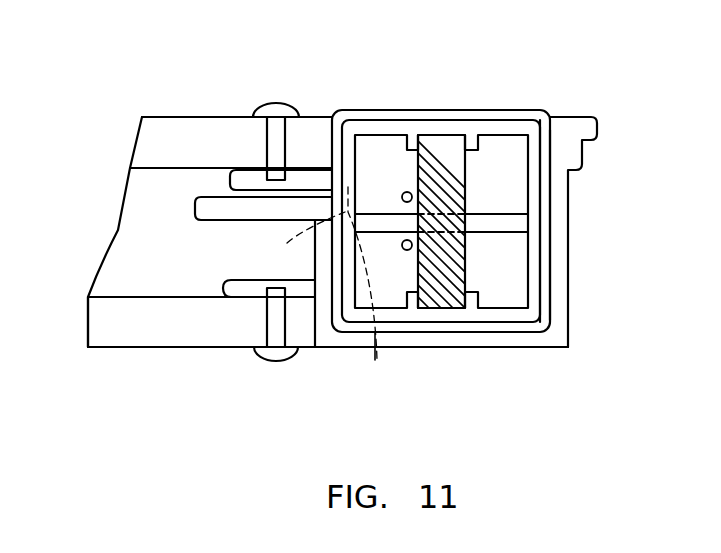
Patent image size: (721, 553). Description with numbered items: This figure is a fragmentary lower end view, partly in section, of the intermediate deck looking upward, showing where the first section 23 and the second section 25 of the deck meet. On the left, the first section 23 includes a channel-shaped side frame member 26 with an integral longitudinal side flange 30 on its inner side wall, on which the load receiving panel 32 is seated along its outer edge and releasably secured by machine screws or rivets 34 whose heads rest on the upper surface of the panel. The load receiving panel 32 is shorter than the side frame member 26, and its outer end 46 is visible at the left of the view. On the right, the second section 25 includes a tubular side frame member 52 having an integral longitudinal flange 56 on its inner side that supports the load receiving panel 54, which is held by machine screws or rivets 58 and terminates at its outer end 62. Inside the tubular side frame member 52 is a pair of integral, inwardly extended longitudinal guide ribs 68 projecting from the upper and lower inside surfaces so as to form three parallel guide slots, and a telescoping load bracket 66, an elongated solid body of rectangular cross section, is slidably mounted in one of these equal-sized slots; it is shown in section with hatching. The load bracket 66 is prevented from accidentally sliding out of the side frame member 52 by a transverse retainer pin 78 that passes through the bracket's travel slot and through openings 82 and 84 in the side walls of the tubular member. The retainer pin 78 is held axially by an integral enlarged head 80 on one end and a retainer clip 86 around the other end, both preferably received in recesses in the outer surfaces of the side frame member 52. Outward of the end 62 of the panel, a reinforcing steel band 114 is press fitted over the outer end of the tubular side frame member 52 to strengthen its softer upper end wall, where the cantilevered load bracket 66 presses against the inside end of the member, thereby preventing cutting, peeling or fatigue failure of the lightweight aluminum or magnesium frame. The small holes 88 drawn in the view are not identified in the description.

The first section 23 is at (135, 351).
The second section 25 is at (214, 117).
The side frame member 26 is at (550, 337).
The longitudinal side flange 30 is at (227, 290).
The load receiving panel 32 is at (217, 330).
The machine screws or rivets 34 is at (278, 352).
The outer end 46 is at (108, 328).
The side frame member 52 is at (485, 128).
The load receiving panel 54 is at (236, 117).
The longitudinal flange 56 is at (303, 178).
The machine screws or rivets 58 is at (275, 158).
The outer end 62 is at (168, 142).
The telescoping load bracket 66 is at (446, 196).
The guide ribs 68 is at (410, 143).
The retainer pin 78 is at (500, 222).
The integral head 80 is at (539, 214).
The opening 82 is at (547, 240).
The opening 84 is at (375, 357).
The retainer clip 86 is at (322, 273).
The pin hole 88 is at (404, 192).
The reinforcing steel band 114 is at (542, 112).